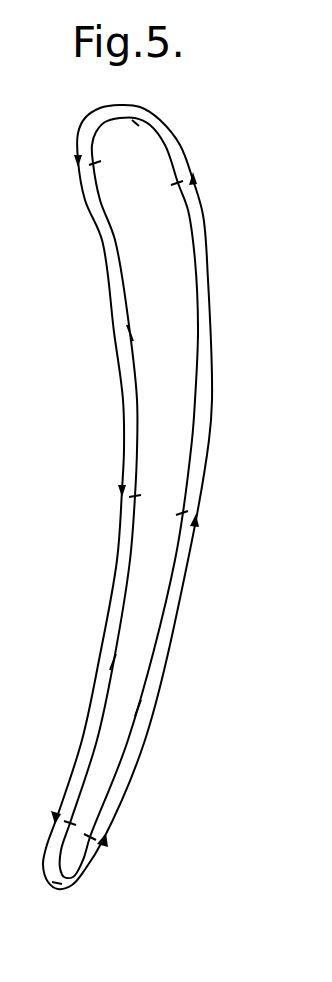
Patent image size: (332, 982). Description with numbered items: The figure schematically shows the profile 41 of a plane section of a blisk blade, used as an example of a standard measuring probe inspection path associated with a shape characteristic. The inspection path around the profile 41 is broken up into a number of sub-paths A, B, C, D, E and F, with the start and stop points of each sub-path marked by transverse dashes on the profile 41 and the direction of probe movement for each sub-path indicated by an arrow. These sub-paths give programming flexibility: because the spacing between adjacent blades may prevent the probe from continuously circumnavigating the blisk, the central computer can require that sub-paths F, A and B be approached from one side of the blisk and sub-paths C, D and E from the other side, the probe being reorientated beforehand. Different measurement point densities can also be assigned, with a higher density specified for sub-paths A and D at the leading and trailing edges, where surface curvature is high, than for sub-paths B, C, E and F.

The profile 41 is at (193, 238).
The sub-path A is at (135, 122).
The sub-path B is at (130, 333).
The sub-path C is at (112, 662).
The sub-path D is at (57, 883).
The sub-path E is at (140, 708).
The sub-path F is at (198, 330).